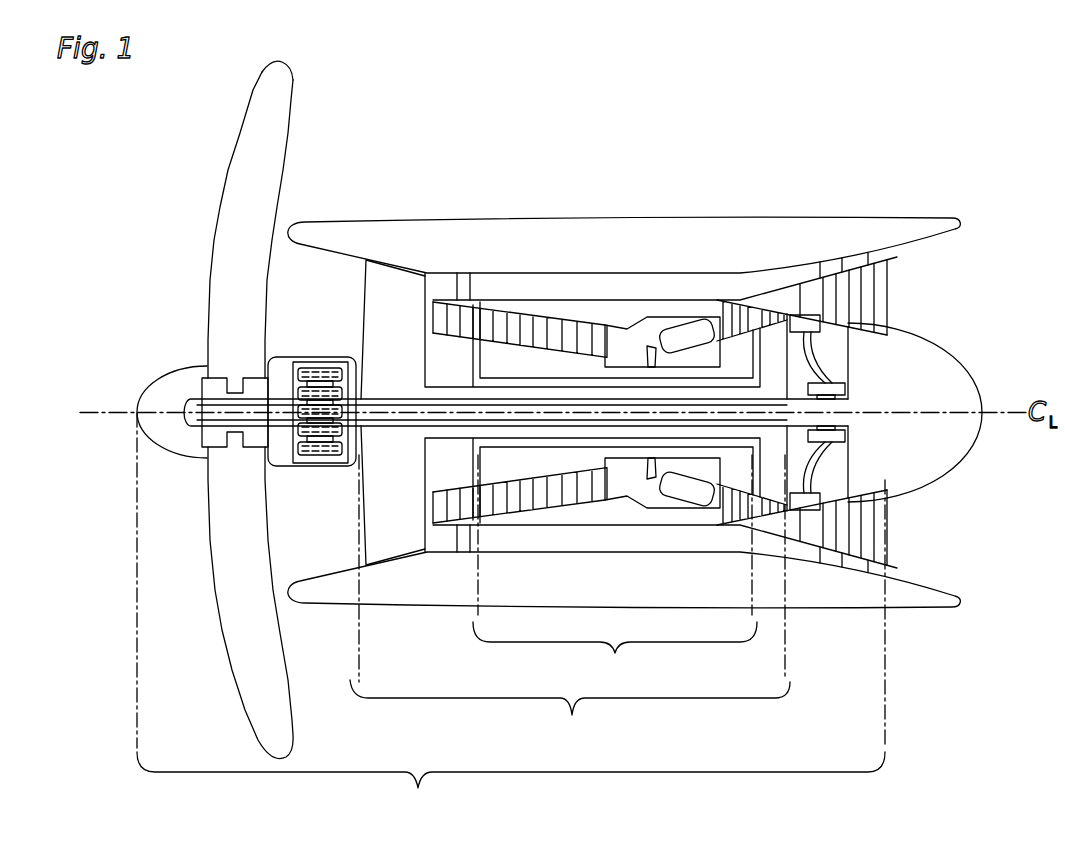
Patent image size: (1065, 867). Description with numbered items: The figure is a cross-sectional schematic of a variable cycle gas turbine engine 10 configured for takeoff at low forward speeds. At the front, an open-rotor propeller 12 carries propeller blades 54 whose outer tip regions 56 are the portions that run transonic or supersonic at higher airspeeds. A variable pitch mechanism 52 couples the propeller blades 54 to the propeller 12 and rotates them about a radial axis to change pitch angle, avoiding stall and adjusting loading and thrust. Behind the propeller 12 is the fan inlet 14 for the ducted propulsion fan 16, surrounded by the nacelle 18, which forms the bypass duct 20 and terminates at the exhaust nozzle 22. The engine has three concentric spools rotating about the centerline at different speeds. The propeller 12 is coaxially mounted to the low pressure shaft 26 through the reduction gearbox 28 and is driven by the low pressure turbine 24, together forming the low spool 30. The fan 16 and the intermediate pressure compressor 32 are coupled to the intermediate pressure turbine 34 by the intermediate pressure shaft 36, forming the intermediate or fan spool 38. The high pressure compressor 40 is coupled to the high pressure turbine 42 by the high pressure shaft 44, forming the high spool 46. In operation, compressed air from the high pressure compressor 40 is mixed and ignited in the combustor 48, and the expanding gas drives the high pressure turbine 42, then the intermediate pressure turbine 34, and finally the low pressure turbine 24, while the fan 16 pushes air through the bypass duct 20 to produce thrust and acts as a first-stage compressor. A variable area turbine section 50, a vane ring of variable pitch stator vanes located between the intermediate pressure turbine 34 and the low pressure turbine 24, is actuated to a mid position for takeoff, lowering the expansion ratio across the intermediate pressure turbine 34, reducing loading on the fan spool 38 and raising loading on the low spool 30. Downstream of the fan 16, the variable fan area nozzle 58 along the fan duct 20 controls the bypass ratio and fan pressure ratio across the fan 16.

The gas turbine engine 10 is at (985, 88).
The open-rotor propeller 12 is at (187, 280).
The fan inlet 14 is at (292, 331).
The ducted propulsion fan 16 is at (377, 308).
The nacelle 18 is at (350, 232).
The bypass duct 20 is at (600, 288).
The exhaust nozzle 22 is at (938, 543).
The low pressure turbine 24 is at (893, 290).
The low pressure shaft 26 is at (390, 415).
The reduction gearbox 28 is at (320, 460).
The low spool 30 is at (511, 616).
The intermediate pressure compressor 32 is at (438, 290).
The intermediate pressure turbine 34 is at (767, 292).
The intermediate pressure shaft 36 is at (423, 430).
The intermediate spool 38 is at (570, 601).
The high pressure compressor 40 is at (545, 310).
The high pressure turbine 42 is at (730, 303).
The high pressure shaft 44 is at (623, 453).
The high spool 46 is at (615, 572).
The combustor 48 is at (683, 333).
The variable area turbine section 50 is at (807, 298).
The variable pitch mechanism 52 is at (207, 435).
The propeller blades 54 is at (245, 160).
The tip regions 56 is at (285, 60).
The variable fan area nozzle 58 is at (463, 287).